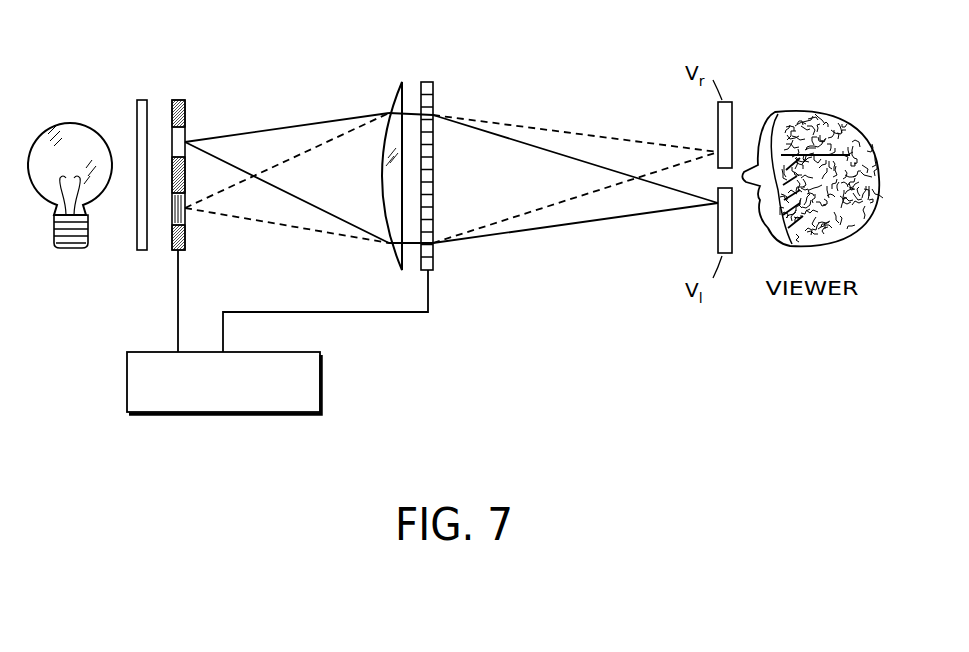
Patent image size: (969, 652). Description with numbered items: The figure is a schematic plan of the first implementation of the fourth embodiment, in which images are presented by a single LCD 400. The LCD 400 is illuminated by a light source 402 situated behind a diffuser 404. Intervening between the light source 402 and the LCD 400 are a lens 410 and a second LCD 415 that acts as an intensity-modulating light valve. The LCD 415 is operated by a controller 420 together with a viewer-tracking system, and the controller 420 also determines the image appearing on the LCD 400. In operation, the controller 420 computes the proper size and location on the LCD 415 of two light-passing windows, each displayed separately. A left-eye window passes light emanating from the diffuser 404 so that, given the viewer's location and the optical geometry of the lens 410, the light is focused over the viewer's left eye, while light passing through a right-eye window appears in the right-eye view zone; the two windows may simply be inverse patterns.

The LCD 400 is at (432, 80).
The light source 402 is at (70, 258).
The diffuser 404 is at (140, 258).
The lens 410 is at (398, 78).
The LCD 415 is at (177, 98).
The controller 420 is at (183, 415).